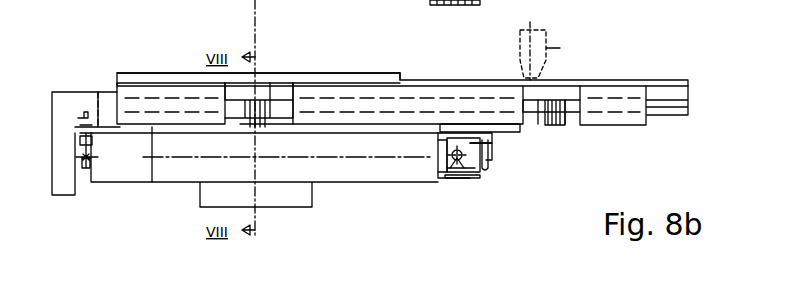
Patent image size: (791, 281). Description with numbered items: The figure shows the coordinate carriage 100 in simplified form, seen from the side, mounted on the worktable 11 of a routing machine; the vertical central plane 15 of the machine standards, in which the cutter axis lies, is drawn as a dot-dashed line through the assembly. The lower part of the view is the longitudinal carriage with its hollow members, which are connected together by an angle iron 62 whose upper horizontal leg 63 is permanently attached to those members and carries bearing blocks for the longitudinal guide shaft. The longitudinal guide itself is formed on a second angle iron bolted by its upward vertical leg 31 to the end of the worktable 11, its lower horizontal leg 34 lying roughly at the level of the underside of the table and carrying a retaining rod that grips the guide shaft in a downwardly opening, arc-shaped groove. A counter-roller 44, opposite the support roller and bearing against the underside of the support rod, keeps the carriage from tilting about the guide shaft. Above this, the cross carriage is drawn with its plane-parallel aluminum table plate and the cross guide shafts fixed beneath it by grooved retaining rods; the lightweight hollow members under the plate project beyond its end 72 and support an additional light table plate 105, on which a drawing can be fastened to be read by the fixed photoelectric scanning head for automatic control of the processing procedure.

The counter-roller 44 is at (88, 178).
The worktable 11 is at (369, 172).
The coordinate carriage 100 is at (335, 68).
The end 72 is at (403, 80).
The horizontal leg 63 is at (453, 133).
The table plate 105 is at (585, 83).
The vertical leg 31 is at (430, 165).
The horizontal leg 34 is at (460, 175).
The angle iron 62 is at (490, 160).
The vertical central plane 15 is at (255, 17).